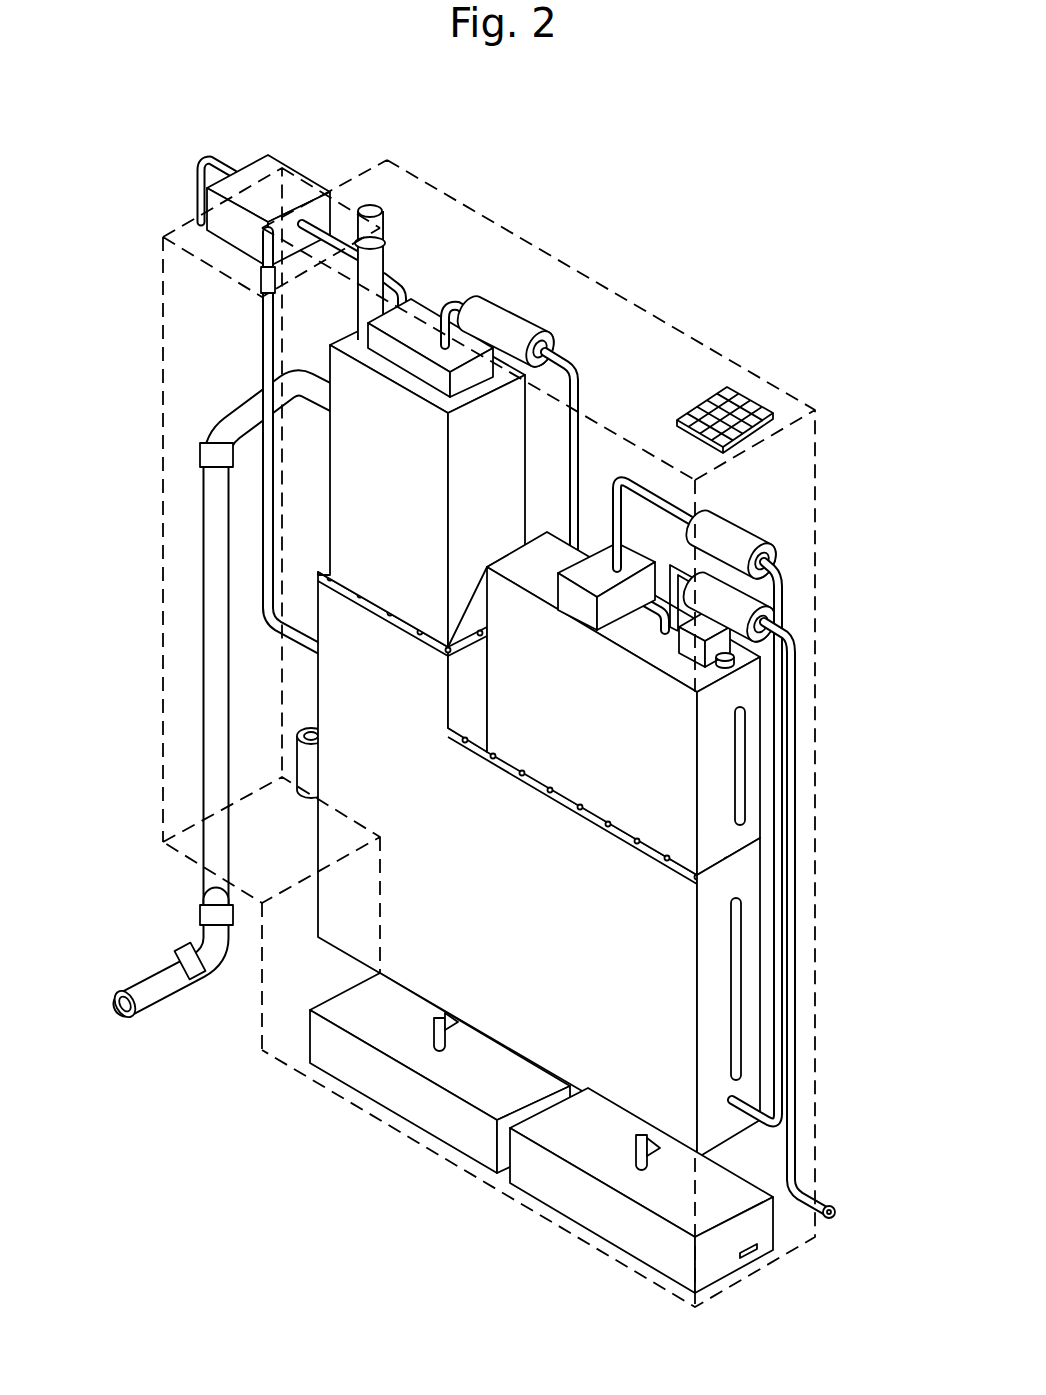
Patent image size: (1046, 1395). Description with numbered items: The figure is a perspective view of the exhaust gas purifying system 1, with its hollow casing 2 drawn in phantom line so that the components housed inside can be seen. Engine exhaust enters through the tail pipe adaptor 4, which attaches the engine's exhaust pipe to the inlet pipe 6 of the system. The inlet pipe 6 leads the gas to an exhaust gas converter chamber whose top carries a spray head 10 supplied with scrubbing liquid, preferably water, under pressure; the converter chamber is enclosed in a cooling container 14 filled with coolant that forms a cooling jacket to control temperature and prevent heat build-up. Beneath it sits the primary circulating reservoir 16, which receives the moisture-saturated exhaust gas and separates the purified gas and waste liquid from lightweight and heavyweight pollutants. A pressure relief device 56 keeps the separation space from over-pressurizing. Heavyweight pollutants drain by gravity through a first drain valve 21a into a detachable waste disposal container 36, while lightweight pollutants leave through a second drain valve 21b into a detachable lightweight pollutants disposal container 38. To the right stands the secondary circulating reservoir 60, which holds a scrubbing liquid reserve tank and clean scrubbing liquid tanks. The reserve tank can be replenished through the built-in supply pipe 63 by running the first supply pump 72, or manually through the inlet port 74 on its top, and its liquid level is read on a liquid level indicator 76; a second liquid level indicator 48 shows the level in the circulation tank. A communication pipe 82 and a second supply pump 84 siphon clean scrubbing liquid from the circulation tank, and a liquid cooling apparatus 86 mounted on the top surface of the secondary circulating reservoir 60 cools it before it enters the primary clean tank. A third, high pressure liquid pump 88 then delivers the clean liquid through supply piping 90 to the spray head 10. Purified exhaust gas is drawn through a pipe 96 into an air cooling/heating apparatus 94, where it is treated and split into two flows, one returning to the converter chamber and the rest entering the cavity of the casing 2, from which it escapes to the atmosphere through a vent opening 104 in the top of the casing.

The exhaust gas purifying system 1 is at (843, 463).
The casing 2 is at (163, 300).
The tail pipe adaptor 4 is at (220, 960).
The inlet pipe 6 is at (189, 617).
The spray head 10 is at (414, 328).
The cooling container 14 is at (372, 530).
The primary circulating reservoir 16 is at (372, 686).
The first drain valve 21a is at (637, 1152).
The second drain valve 21b is at (432, 1032).
The waste disposal container 36 is at (581, 1208).
The lightweight pollutants disposal container 38 is at (376, 1086).
The liquid level indicator 48 is at (742, 975).
The pressure relief device 56 is at (383, 268).
The secondary circulating reservoir 60 is at (660, 728).
The supply pipe 63 is at (797, 1148).
The first supply pump 72 is at (730, 603).
The inlet port 74 is at (737, 660).
The liquid level indicator 76 is at (746, 797).
The communication pipe 82 is at (783, 583).
The second supply pump 84 is at (740, 528).
The liquid cooling apparatus 86 is at (597, 557).
The high pressure liquid pump 88 is at (520, 323).
The supply piping 90 is at (568, 368).
The air cooling/heating apparatus 94 is at (256, 172).
The pipe 96 is at (262, 328).
The vent opening 104 is at (708, 420).